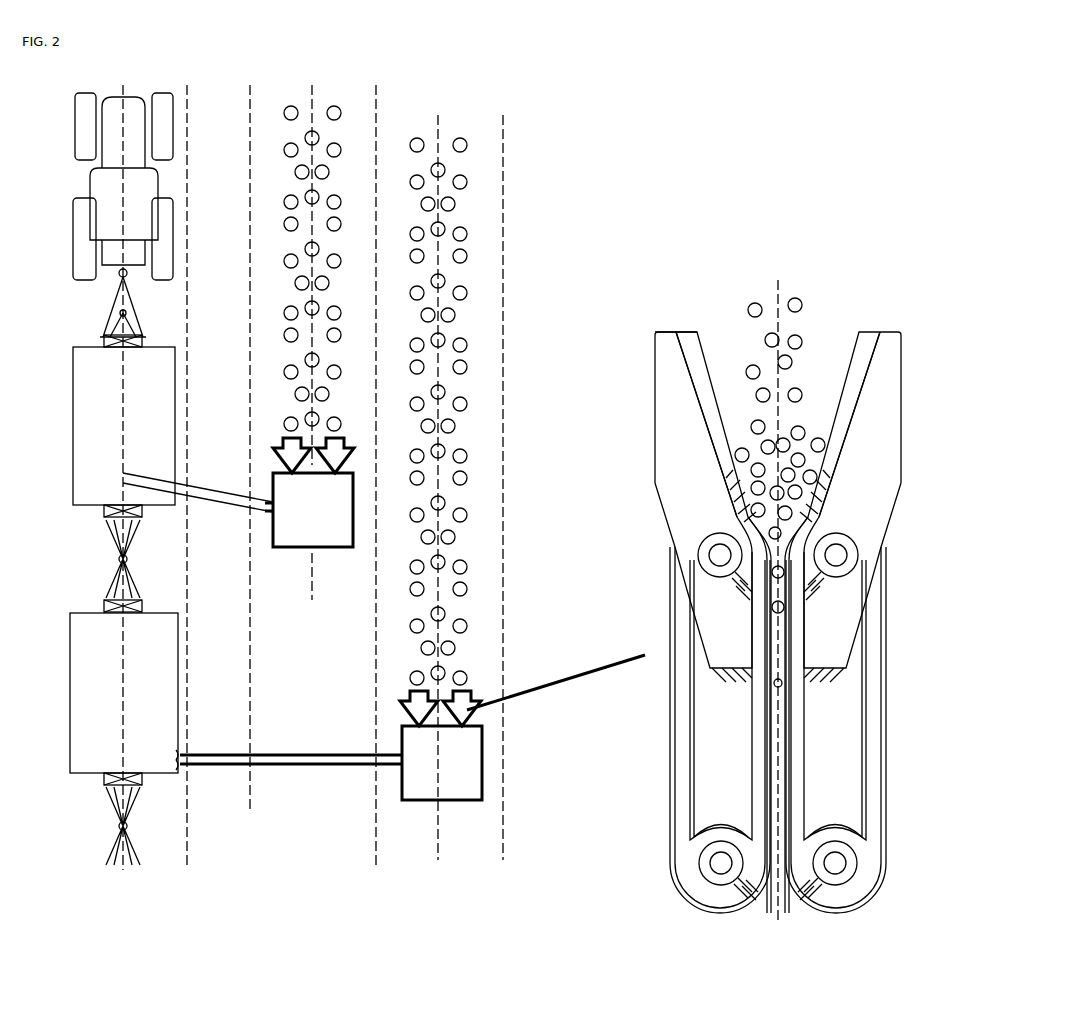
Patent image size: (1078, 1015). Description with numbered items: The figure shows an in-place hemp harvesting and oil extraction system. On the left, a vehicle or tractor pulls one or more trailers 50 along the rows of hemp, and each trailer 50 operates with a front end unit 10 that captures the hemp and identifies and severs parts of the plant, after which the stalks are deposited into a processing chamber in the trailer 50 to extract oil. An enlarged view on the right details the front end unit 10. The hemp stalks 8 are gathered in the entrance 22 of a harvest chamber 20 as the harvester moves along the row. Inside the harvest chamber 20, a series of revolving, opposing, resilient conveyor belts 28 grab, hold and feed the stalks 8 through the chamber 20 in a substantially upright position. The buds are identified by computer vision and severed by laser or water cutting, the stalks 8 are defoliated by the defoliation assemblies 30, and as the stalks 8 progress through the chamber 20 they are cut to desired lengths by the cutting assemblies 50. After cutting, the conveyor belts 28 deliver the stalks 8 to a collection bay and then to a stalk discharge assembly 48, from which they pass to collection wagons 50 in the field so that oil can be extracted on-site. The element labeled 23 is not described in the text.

The stalk 8 is at (770, 338).
The front end unit 10 is at (313, 492).
The harvest chamber 20 is at (761, 595).
The entrance 22 is at (818, 368).
The opener blade 23 is at (686, 357).
The conveyor belt 28 is at (672, 730).
The defoliation assembly 30 is at (707, 455).
The stalk discharge assembly 48 is at (222, 505).
The trailer 50 is at (73, 440).